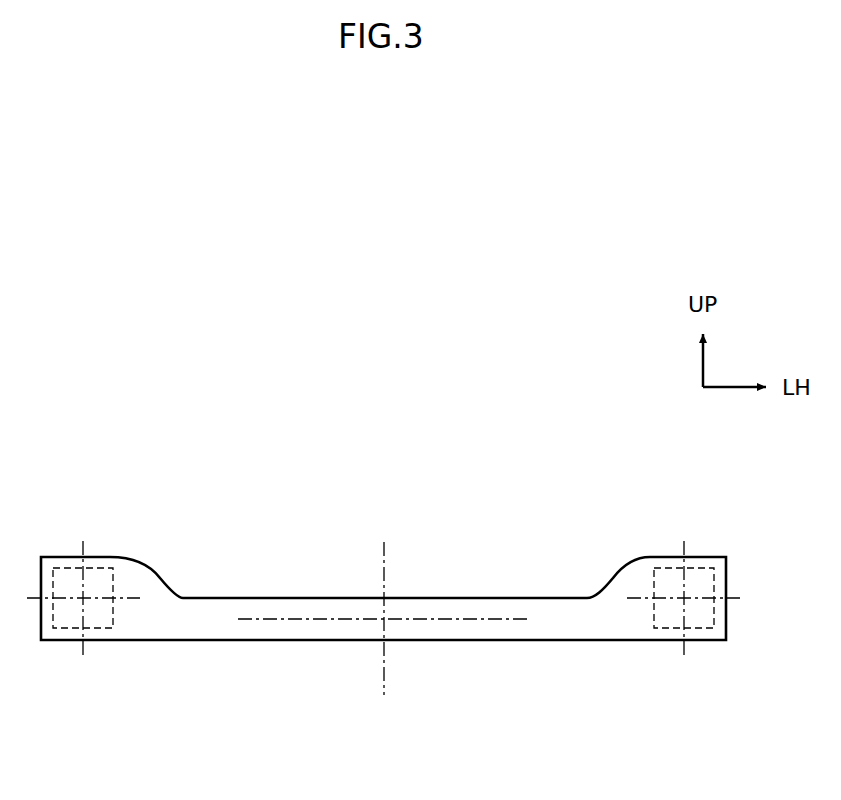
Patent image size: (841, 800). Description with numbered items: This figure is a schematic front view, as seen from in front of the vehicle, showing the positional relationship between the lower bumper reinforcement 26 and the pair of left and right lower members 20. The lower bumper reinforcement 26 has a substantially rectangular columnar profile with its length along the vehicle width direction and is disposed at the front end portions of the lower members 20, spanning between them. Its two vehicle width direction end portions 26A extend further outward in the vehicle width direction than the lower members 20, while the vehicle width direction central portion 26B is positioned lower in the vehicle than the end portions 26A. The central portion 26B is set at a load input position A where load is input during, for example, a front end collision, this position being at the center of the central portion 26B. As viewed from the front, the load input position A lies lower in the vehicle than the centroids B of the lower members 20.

The lower member 20 is at (63, 568).
The lower bumper reinforcement 26 is at (383, 623).
The vehicle width direction end portion 26A is at (100, 642).
The vehicle width direction central portion 26B is at (357, 641).
The load input position A is at (384, 620).
The centroid B is at (83, 597).